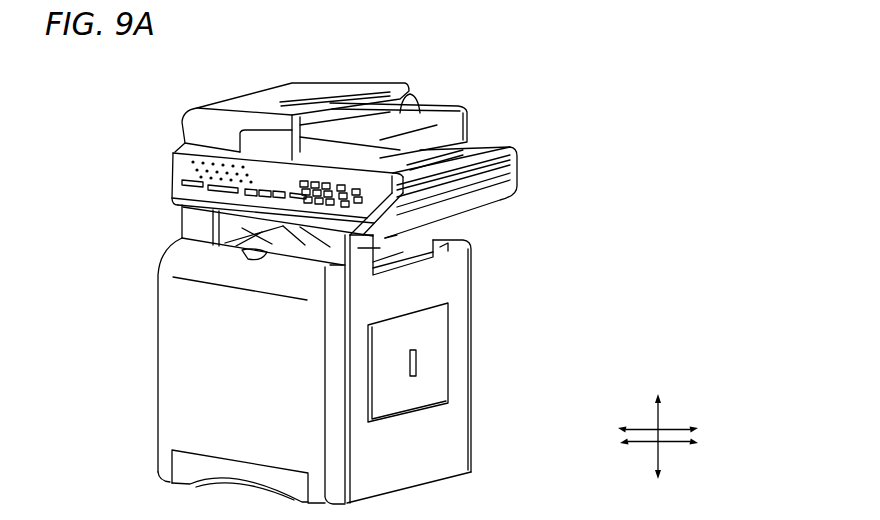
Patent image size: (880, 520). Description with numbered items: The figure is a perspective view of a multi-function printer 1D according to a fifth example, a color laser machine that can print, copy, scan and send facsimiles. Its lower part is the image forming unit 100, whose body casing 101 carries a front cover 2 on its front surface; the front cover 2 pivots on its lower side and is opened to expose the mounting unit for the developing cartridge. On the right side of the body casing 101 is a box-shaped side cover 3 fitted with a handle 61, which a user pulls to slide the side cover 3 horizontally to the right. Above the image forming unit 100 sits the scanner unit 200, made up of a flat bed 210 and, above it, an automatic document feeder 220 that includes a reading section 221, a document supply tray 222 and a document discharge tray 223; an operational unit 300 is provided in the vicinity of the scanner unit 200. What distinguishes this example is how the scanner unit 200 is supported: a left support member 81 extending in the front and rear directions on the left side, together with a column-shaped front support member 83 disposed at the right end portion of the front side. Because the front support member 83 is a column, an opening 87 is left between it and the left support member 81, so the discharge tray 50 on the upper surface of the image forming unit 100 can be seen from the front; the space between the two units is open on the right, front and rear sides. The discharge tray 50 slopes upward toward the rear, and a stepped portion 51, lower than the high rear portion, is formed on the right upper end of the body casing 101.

The multi-function printer 1D is at (584, 51).
The image forming unit 100 is at (521, 266).
The body casing 101 is at (487, 325).
The front cover 2 is at (175, 358).
The side cover 3 is at (440, 348).
The handle 61 is at (417, 363).
The left support member 81 is at (193, 222).
The opening 87 is at (231, 229).
The front support member 83 is at (375, 248).
The stepped portion 51 is at (470, 257).
The discharge tray 50 is at (423, 236).
The scanner unit 200 is at (472, 86).
The flat bed 210 is at (510, 172).
The automatic document feeder 220 is at (353, 71).
The reading section 221 is at (283, 97).
The document supply tray 222 is at (418, 99).
The document discharge tray 223 is at (437, 126).
The operational unit 300 is at (178, 158).